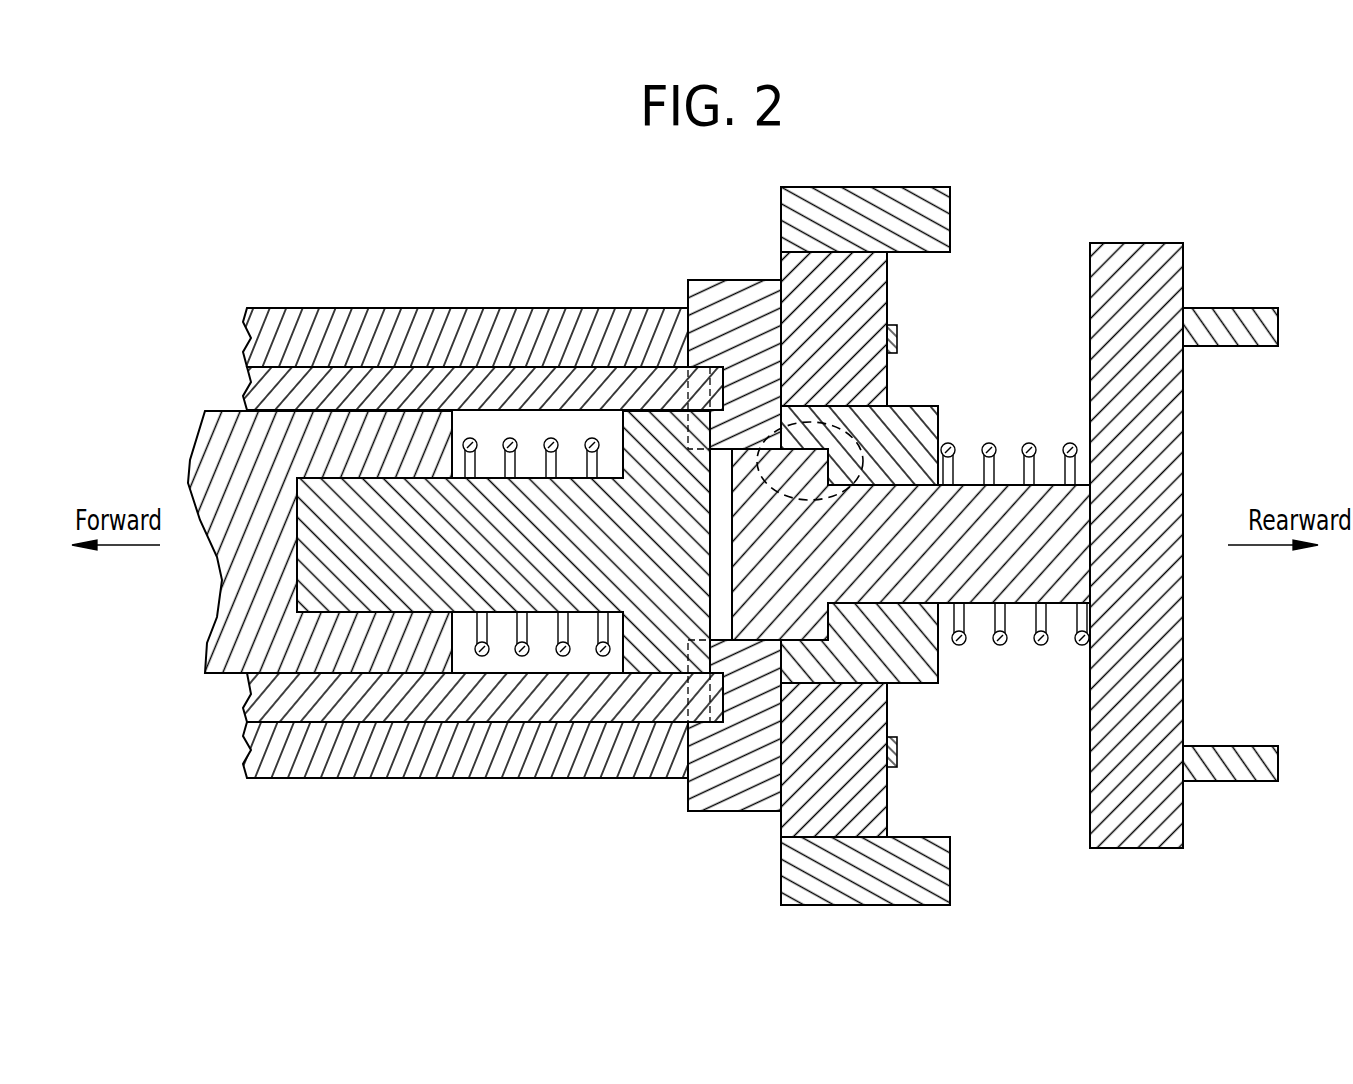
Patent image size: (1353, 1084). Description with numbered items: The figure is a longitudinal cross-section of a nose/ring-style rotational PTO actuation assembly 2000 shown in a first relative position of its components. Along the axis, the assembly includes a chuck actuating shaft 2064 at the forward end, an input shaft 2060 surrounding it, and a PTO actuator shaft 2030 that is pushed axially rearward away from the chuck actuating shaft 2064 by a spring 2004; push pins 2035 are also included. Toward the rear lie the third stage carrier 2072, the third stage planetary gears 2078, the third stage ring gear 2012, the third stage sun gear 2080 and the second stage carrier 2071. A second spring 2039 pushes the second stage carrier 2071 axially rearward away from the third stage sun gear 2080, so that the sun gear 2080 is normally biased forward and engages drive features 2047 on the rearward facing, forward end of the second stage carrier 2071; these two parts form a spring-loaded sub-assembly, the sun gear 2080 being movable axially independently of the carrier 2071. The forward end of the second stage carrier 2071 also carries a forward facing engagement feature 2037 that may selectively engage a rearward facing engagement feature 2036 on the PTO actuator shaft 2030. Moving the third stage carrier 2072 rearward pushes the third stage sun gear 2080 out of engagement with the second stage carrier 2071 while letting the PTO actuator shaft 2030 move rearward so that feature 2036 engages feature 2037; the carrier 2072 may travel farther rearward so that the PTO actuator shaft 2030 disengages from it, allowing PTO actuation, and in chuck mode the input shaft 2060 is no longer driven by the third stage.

The rotational PTO actuation assembly 2000 is at (1218, 229).
The spring 2004 is at (592, 440).
The third stage ring gear 2012 is at (907, 200).
The PTO actuator shaft 2030 is at (380, 477).
The push pins 2035 is at (250, 692).
The rearward facing engagement feature 2036 is at (727, 588).
The forward facing engagement feature 2037 is at (732, 597).
The spring 2039 is at (963, 645).
The drive features 2047 is at (860, 410).
The input shaft 2060 is at (418, 327).
The chuck actuating shaft 2064 is at (250, 455).
The second stage carrier 2071 is at (1150, 665).
The third stage carrier 2072 is at (742, 280).
The third stage planetary gears 2078 is at (888, 295).
The third stage sun gear 2080 is at (940, 688).